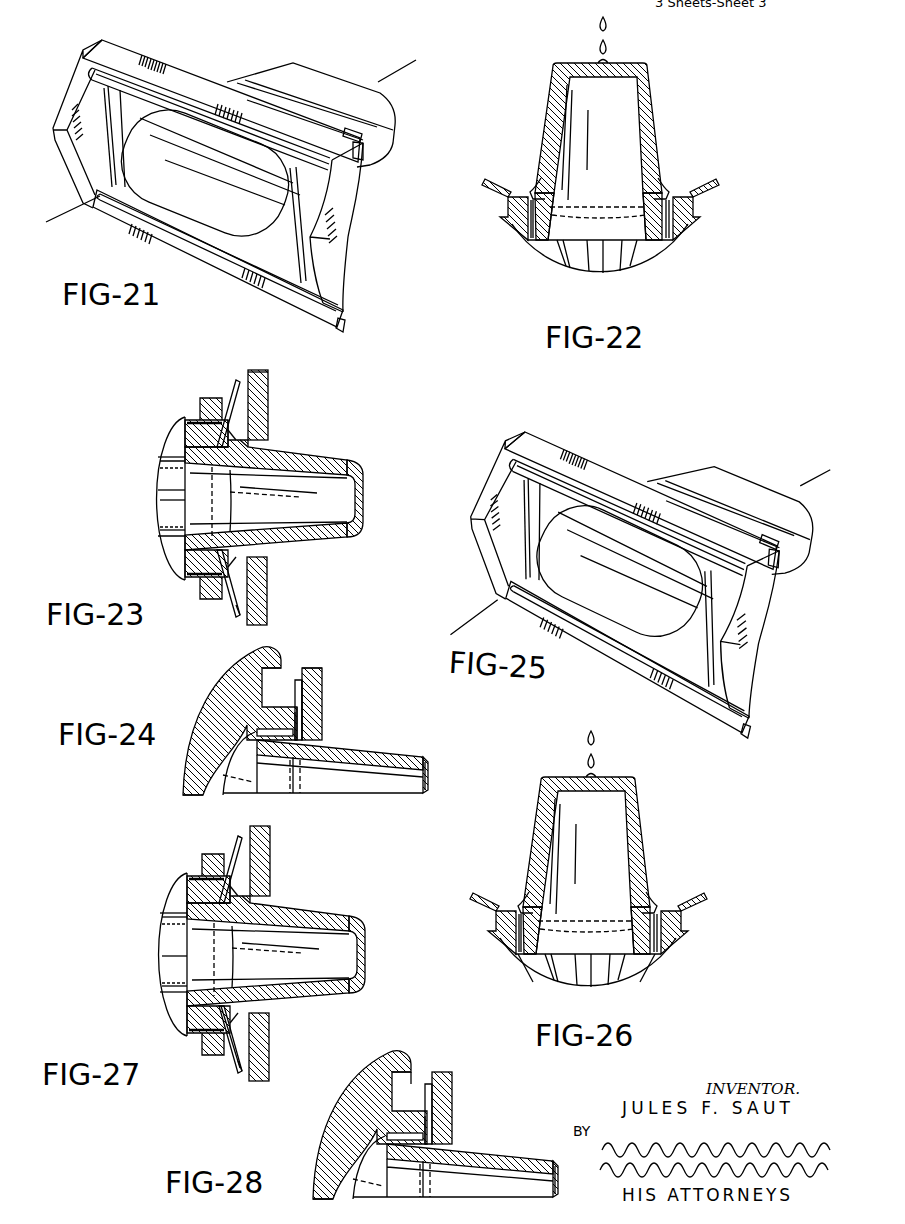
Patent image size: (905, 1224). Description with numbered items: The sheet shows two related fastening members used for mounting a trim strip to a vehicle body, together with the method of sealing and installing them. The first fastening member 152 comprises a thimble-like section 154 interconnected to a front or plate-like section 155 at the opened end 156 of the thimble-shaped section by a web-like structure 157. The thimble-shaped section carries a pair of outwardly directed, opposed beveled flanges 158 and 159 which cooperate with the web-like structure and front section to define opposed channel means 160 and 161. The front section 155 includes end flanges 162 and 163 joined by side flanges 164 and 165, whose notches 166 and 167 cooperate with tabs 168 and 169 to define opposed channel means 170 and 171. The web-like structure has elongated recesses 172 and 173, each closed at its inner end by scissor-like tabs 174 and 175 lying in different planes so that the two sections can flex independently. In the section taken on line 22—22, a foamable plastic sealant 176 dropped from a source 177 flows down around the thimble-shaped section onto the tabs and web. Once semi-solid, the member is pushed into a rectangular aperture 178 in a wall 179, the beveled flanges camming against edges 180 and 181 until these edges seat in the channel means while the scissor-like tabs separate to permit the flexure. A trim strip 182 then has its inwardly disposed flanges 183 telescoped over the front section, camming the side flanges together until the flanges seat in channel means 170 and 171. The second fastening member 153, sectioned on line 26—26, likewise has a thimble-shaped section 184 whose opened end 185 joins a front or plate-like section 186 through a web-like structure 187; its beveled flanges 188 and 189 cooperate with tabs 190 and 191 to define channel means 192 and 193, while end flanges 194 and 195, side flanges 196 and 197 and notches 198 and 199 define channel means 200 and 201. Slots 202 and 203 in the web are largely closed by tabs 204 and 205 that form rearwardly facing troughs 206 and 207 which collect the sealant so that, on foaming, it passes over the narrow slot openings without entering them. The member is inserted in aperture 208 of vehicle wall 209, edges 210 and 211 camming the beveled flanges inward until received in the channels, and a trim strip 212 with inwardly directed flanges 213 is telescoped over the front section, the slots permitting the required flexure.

In FIG. 21, the section line 22— 22 is at (388, 56).
In FIG. 25, the section line 26— 26 is at (642, 557).
In FIG. 21, the fastening member 152 is at (236, 61).
In FIG. 22, the fastening member 152 is at (701, 276).
In FIG. 23, the fastening member 152 is at (141, 462).
In FIG. 24, the fastening member 152 is at (379, 712).
In FIG. 25, the fastening member 153 is at (642, 483).
In FIG. 26, the fastening member 153 is at (727, 932).
In FIG. 27, the fastening member 153 is at (122, 954).
In FIG. 28, the fastening member 153 is at (485, 1128).
In FIG. 21, the thimble-like section 154 is at (313, 59).
In FIG. 22, the thimble-like section 154 is at (677, 91).
In FIG. 23, the thimble-like section 154 is at (349, 449).
In FIG. 24, the thimble-like section 154 is at (433, 751).
In FIG. 21, the front or plate-like section 155 is at (78, 49).
In FIG. 22, the front or plate-like section 155 is at (663, 269).
In FIG. 23, the front or plate-like section 155 is at (136, 494).
In FIG. 24, the front or plate-like section 155 is at (211, 796).
In FIG. 21, the opened end 156 is at (135, 136).
In FIG. 22, the opened end 156 is at (620, 259).
In FIG. 23, the opened end 156 is at (190, 530).
In FIG. 24, the opened end 156 is at (263, 788).
In FIG. 21, the web-like structure 157 is at (127, 112).
In FIG. 22, the web-like structure 157 is at (583, 256).
In FIG. 23, the web-like structure 157 is at (184, 505).
In FIG. 24, the web-like structure 157 is at (246, 796).
In FIG. 22, the beveled flange 158 is at (538, 174).
In FIG. 23, the beveled flange 158 is at (258, 448).
In FIG. 24, the beveled flange 158 is at (362, 750).
In FIG. 22, the beveled flange 159 is at (660, 175).
In FIG. 23, the beveled flange 159 is at (271, 545).
In FIG. 22, the channel means 160 is at (528, 184).
In FIG. 23, the channel means 160 is at (240, 430).
In FIG. 22, the channel means 161 is at (674, 191).
In FIG. 23, the channel means 161 is at (268, 593).
In FIG. 21, the end flange 162 is at (80, 82).
In FIG. 22, the end flange 162 is at (612, 271).
In FIG. 23, the end flange 162 is at (166, 447).
In FIG. 24, the end flange 162 is at (186, 775).
In FIG. 21, the end flange 163 is at (318, 260).
In FIG. 21, the side flange 164 is at (356, 166).
In FIG. 22, the side flange 164 is at (504, 223).
In FIG. 23, the side flange 164 is at (212, 400).
In FIG. 24, the side flange 164 is at (255, 668).
In FIG. 21, the side flange 165 is at (233, 272).
In FIG. 22, the side flange 165 is at (696, 222).
In FIG. 23, the side flange 165 is at (192, 587).
In FIG. 21, the notch 166 is at (374, 147).
In FIG. 21, the notch 167 is at (341, 324).
In FIG. 21, the tab 168 is at (352, 134).
In FIG. 22, the tab 168 is at (484, 183).
In FIG. 23, the tab 168 is at (260, 378).
In FIG. 24, the tab 168 is at (319, 672).
In FIG. 21, the tab 169 is at (293, 302).
In FIG. 22, the tab 169 is at (714, 186).
In FIG. 23, the tab 169 is at (243, 612).
In FIG. 21, the channel means 170 is at (323, 128).
In FIG. 22, the channel means 170 is at (505, 206).
In FIG. 23, the channel means 170 is at (235, 378).
In FIG. 24, the channel means 170 is at (290, 690).
In FIG. 21, the channel means 171 is at (314, 312).
In FIG. 22, the channel means 171 is at (713, 196).
In FIG. 23, the channel means 171 is at (219, 606).
In FIG. 21, the elongated recess 172 is at (183, 115).
In FIG. 22, the elongated recess 172 is at (539, 246).
In FIG. 23, the elongated recess 172 is at (205, 420).
In FIG. 21, the elongated recess 173 is at (110, 206).
In FIG. 22, the elongated recess 173 is at (693, 238).
In FIG. 23, the elongated recess 173 is at (188, 572).
In FIG. 22, the scissor-like tab 174 is at (532, 241).
In FIG. 23, the scissor-like tab 174 is at (226, 392).
In FIG. 24, the scissor-like tab 174 is at (300, 716).
In FIG. 22, the scissor-like tab 175 is at (541, 241).
In FIG. 23, the scissor-like tab 175 is at (205, 440).
In FIG. 24, the scissor-like tab 175 is at (250, 732).
In FIG. 22, the foamable plastic sealant 176 is at (613, 64).
In FIG. 23, the foamable plastic sealant 176 is at (361, 471).
In FIG. 24, the foamable plastic sealant 176 is at (429, 766).
In FIG. 26, the foamable plastic sealant 176 is at (617, 762).
In FIG. 22, the source 177 is at (612, 27).
In FIG. 26, the source 177 is at (615, 749).
In FIG. 23, the rectangular opening or aperture 178 is at (258, 440).
In FIG. 24, the rectangular opening or aperture 178 is at (321, 742).
In FIG. 23, the wall 179 is at (263, 390).
In FIG. 24, the wall 179 is at (321, 677).
In FIG. 23, the edge 180 is at (255, 425).
In FIG. 24, the edge 180 is at (301, 736).
In FIG. 23, the edge 181 is at (260, 566).
In FIG. 24, the trim strip 182 is at (226, 692).
In FIG. 24, the inwardly disposed flange 183 is at (287, 678).
In FIG. 25, the thimble-shaped section 184 is at (730, 493).
In FIG. 26, the thimble-shaped section 184 is at (615, 842).
In FIG. 27, the thimble-shaped section 184 is at (309, 931).
In FIG. 28, the thimble-shaped section 184 is at (549, 1150).
In FIG. 25, the opened end 185 is at (619, 571).
In FIG. 26, the opened end 185 is at (617, 975).
In FIG. 27, the opened end 185 is at (164, 959).
In FIG. 25, the front or plate-like section 186 is at (504, 415).
In FIG. 26, the front or plate-like section 186 is at (548, 985).
In FIG. 27, the front or plate-like section 186 is at (159, 934).
In FIG. 25, the web-like structure 187 is at (556, 489).
In FIG. 26, the web-like structure 187 is at (648, 987).
In FIG. 27, the web-like structure 187 is at (147, 941).
In FIG. 28, the web-like structure 187 is at (413, 1166).
In FIG. 26, the beveled flange 188 is at (519, 891).
In FIG. 27, the beveled flange 188 is at (268, 931).
In FIG. 28, the beveled flange 188 is at (424, 1175).
In FIG. 26, the beveled flange 189 is at (664, 892).
In FIG. 27, the beveled flange 189 is at (268, 985).
In FIG. 25, the tab 190 is at (628, 503).
In FIG. 26, the tab 190 is at (462, 889).
In FIG. 27, the tab 190 is at (212, 860).
In FIG. 28, the tab 190 is at (450, 1088).
In FIG. 25, the tab 191 is at (627, 662).
In FIG. 26, the tab 191 is at (708, 882).
In FIG. 27, the tab 191 is at (243, 1056).
In FIG. 26, the channel means 192 is at (506, 889).
In FIG. 27, the channel means 192 is at (274, 864).
In FIG. 26, the channel means 193 is at (669, 893).
In FIG. 27, the channel means 193 is at (284, 1047).
In FIG. 25, the end flange 194 is at (473, 512).
In FIG. 26, the end flange 194 is at (588, 980).
In FIG. 27, the end flange 194 is at (139, 954).
In FIG. 28, the end flange 194 is at (413, 1177).
In FIG. 25, the end flange 195 is at (769, 635).
In FIG. 25, the side flange 196 is at (630, 491).
In FIG. 26, the side flange 196 is at (508, 963).
In FIG. 27, the side flange 196 is at (190, 874).
In FIG. 28, the side flange 196 is at (343, 1134).
In FIG. 25, the side flange 197 is at (629, 648).
In FIG. 26, the side flange 197 is at (681, 933).
In FIG. 27, the side flange 197 is at (196, 1042).
In FIG. 25, the notch 198 is at (803, 564).
In FIG. 26, the notch 198 is at (548, 936).
In FIG. 27, the notch 198 is at (203, 1078).
In FIG. 25, the notch 199 is at (722, 662).
In FIG. 26, the notch 199 is at (698, 933).
In FIG. 25, the channel means 200 is at (742, 496).
In FIG. 26, the channel means 200 is at (470, 927).
In FIG. 27, the channel means 200 is at (191, 841).
In FIG. 28, the channel means 200 is at (424, 1053).
In FIG. 25, the channel means 201 is at (761, 740).
In FIG. 26, the channel means 201 is at (710, 919).
In FIG. 27, the channel means 201 is at (218, 1067).
In FIG. 25, the slot or recess 202 is at (486, 516).
In FIG. 26, the slot or recess 202 is at (552, 969).
In FIG. 27, the slot or recess 202 is at (156, 889).
In FIG. 25, the slot or recess 203 is at (591, 647).
In FIG. 26, the slot or recess 203 is at (627, 964).
In FIG. 27, the slot or recess 203 is at (158, 1005).
In FIG. 26, the tab 204 is at (522, 967).
In FIG. 27, the tab 204 is at (155, 903).
In FIG. 28, the tab 204 is at (351, 1129).
In FIG. 26, the tab 205 is at (669, 965).
In FIG. 27, the tab 205 is at (169, 1022).
In FIG. 26, the trough 206 is at (556, 923).
In FIG. 26, the trough 207 is at (580, 908).
In FIG. 27, the rectangular aperture 208 is at (280, 889).
In FIG. 28, the rectangular aperture 208 is at (470, 1147).
In FIG. 27, the vehicle wall 209 is at (286, 856).
In FIG. 28, the vehicle wall 209 is at (466, 1102).
In FIG. 27, the edge 210 is at (275, 875).
In FIG. 28, the edge 210 is at (463, 1122).
In FIG. 27, the edge 211 is at (274, 1016).
In FIG. 28, the trim strip 212 is at (352, 1125).
In FIG. 28, the inwardly directed flange 213 is at (381, 1046).